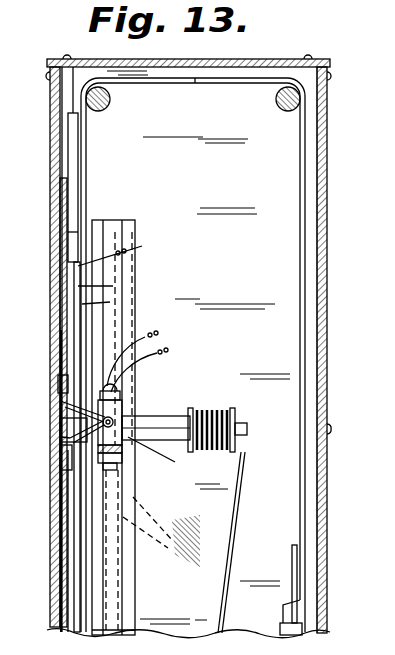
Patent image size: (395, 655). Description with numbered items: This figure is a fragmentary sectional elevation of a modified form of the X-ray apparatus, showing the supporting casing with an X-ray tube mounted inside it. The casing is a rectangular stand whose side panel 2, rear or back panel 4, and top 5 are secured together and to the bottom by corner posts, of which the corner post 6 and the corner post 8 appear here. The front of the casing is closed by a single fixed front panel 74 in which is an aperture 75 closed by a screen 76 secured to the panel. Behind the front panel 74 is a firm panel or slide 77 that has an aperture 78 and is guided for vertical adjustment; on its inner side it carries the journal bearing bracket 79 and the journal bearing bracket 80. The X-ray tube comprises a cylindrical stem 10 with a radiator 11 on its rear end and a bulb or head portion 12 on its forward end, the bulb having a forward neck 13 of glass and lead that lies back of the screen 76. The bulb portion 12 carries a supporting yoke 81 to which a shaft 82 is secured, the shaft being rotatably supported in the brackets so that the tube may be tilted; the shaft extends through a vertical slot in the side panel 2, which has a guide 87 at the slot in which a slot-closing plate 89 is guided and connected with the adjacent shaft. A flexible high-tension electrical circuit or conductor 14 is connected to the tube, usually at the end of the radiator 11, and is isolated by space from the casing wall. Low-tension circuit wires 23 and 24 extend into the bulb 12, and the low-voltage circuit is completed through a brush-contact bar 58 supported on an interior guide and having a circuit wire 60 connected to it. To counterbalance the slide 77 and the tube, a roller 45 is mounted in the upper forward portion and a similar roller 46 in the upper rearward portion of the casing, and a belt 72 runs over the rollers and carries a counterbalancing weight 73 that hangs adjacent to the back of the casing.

The side panel 2 is at (278, 207).
The rear or back panel 4 is at (324, 262).
The top 5 is at (188, 59).
The corner post 6 is at (65, 96).
The corner post 8 is at (316, 155).
The cylindrical stem 10 is at (173, 416).
The radiator 11 is at (234, 412).
The bulb or head portion 12 is at (124, 451).
The forward neck 13 is at (60, 449).
The high-tension electrical circuit or conductor 14 is at (238, 524).
The low-tension circuit wire 23 is at (154, 332).
The low-tension circuit wire 24 is at (163, 351).
The roller 45 is at (111, 101).
The roller 46 is at (276, 101).
The brush-contact bar or rod 58 is at (110, 302).
The circuit wire 60 is at (141, 237).
The belt 72 is at (196, 84).
The counterbalancing weight 73 is at (305, 627).
The fixed front panel 74 is at (52, 159).
The aperture 75 is at (58, 330).
The screen 76 is at (60, 401).
The panel or slide 77 is at (58, 286).
The aperture 78 is at (58, 366).
The journal bearing bracket 79 is at (125, 415).
The journal bearing bracket 80 is at (66, 409).
The supporting yoke 81 is at (123, 463).
The shaft 82 is at (175, 462).
The guide 87 is at (135, 261).
The slot-closing plate 89 is at (113, 284).